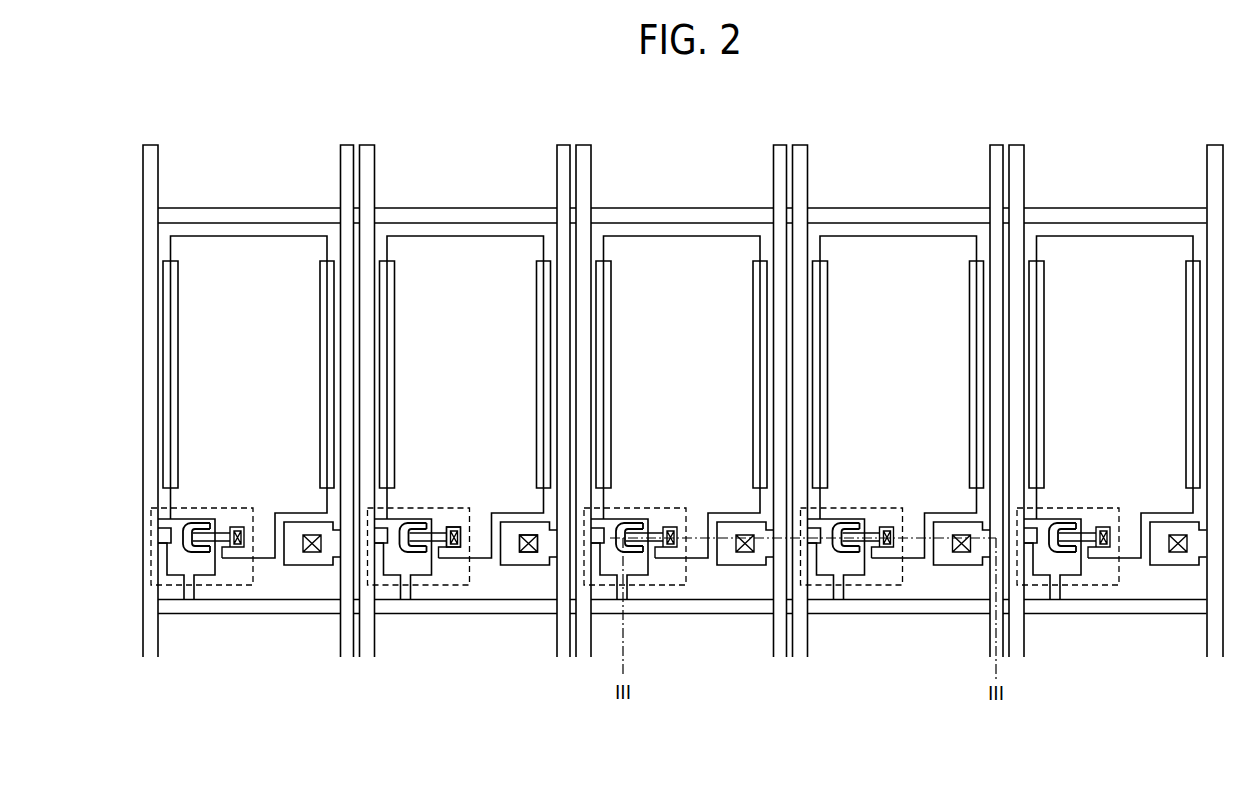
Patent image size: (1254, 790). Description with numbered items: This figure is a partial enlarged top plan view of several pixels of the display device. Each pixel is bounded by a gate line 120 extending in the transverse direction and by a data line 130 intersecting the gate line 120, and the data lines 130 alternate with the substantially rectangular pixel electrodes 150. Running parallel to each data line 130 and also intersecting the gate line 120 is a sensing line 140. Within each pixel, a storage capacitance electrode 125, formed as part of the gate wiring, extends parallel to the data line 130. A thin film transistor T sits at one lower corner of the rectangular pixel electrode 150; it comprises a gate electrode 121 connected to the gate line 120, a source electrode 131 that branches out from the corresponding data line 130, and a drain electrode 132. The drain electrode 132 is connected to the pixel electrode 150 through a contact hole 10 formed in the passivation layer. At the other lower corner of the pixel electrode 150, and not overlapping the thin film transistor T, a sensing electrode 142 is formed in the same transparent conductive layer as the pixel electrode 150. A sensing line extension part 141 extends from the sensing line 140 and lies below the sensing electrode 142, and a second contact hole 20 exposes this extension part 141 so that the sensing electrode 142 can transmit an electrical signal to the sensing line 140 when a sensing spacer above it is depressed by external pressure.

The contact hole 10 is at (452, 518).
The contact hole 20 is at (527, 523).
The gate line 120 is at (272, 606).
The gate electrode 121 is at (421, 577).
The storage capacitance electrode 125 is at (322, 272).
The data line 130 is at (368, 152).
The source electrode 131 is at (390, 546).
The drain electrode 132 is at (458, 562).
The sensing line 140 is at (347, 152).
The sensing line extension part 141 is at (533, 566).
The sensing electrode 142 is at (507, 566).
The pixel electrode 150 is at (463, 236).
The thin film transistor T is at (448, 588).